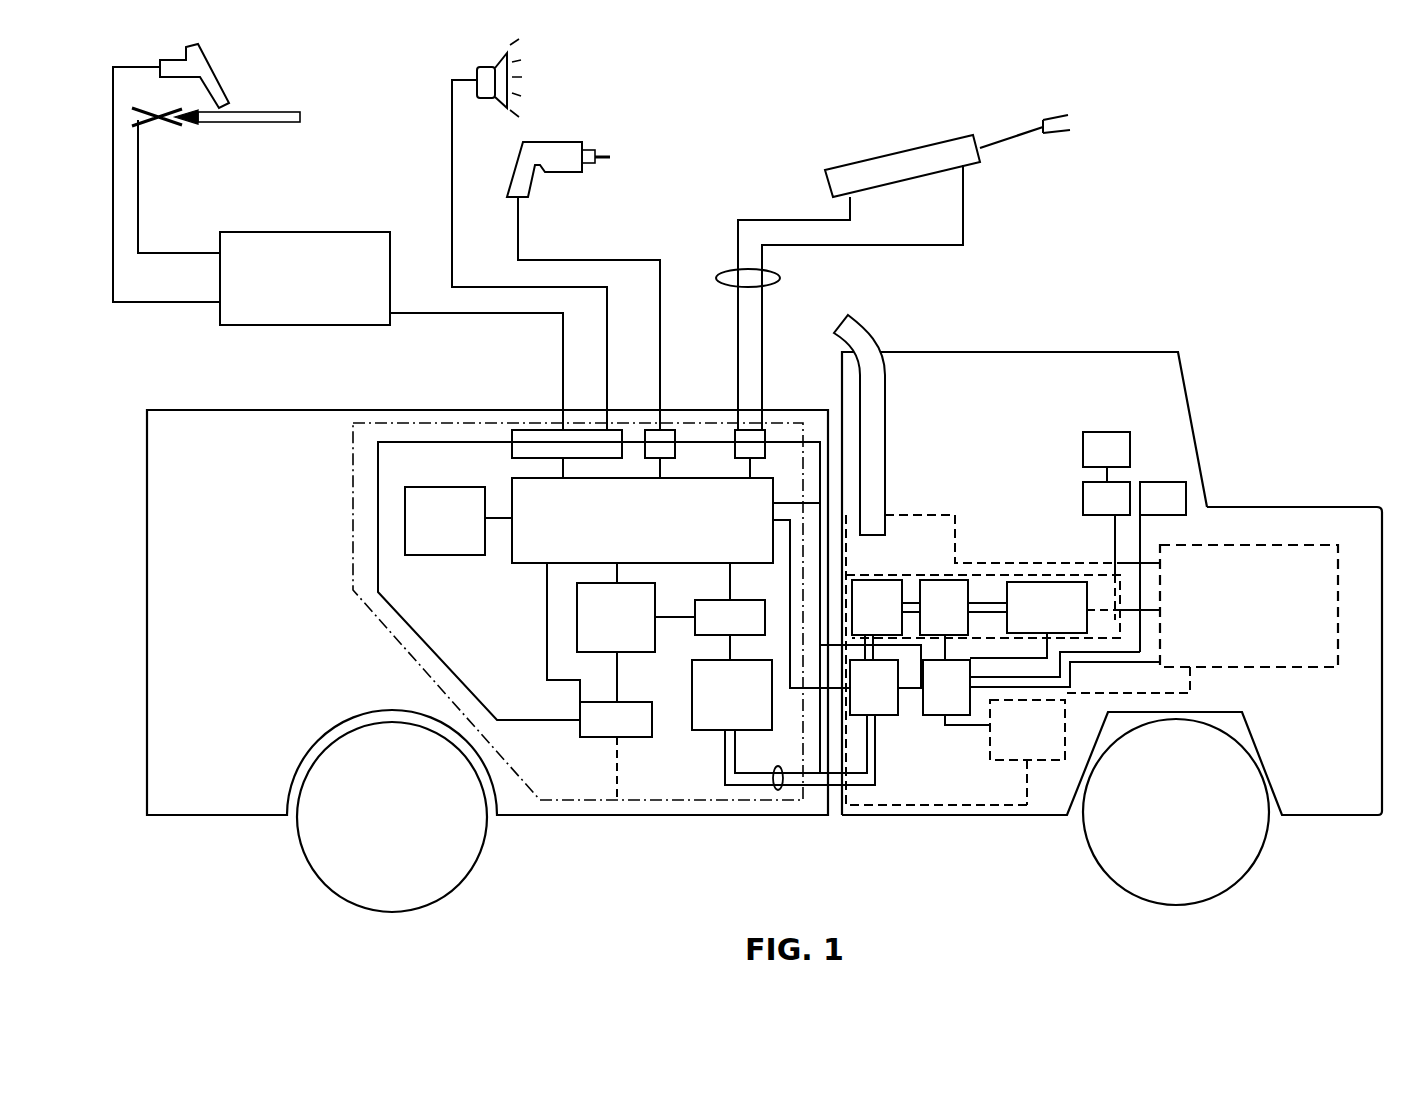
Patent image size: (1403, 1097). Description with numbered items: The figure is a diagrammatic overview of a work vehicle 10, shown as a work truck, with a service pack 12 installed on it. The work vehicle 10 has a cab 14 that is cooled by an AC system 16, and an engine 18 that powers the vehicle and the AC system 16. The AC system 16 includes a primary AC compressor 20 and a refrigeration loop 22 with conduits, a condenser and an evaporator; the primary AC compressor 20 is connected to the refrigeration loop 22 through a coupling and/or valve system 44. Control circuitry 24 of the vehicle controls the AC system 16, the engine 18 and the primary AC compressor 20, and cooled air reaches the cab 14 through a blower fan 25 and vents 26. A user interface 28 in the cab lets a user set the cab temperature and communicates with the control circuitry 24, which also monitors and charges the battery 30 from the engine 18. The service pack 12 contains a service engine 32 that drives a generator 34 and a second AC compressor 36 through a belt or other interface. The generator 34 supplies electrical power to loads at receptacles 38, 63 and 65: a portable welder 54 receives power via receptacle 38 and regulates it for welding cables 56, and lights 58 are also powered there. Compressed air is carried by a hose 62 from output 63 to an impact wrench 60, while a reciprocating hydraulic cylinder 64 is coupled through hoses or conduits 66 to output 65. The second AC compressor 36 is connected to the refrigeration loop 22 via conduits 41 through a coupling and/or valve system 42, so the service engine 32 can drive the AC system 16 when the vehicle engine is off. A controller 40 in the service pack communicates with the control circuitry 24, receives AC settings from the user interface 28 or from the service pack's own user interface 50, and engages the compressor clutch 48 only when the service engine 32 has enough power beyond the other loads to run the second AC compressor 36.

The work vehicle 10 is at (218, 838).
The service pack 12 is at (356, 421).
The cab 14 is at (997, 212).
The AC system 16 is at (970, 575).
The engine 18 is at (1247, 667).
The primary AC compressor 20 is at (1045, 582).
The refrigeration loop 22 is at (878, 580).
The control circuitry 24 is at (962, 660).
The blower fan 25 is at (1083, 496).
The vents 26 is at (1083, 446).
The user interface 28 is at (1180, 483).
The battery 30 is at (992, 760).
The service engine 32 is at (630, 652).
The generator 34 is at (600, 737).
The second AC compressor 36 is at (703, 730).
The receptacle 38 is at (537, 430).
The controller 40 is at (512, 482).
The conduits 41 is at (777, 790).
The coupling and/or valve system 42 is at (898, 715).
The coupling and/or valve system 44 is at (945, 578).
The compressor clutch 48 is at (710, 600).
The user interface 50 is at (445, 487).
The portable welder 54 is at (315, 232).
The cables suitable for a welding application 56 is at (270, 112).
The lights 58 is at (490, 67).
The impact wrench 60 is at (560, 142).
The hose 62 is at (600, 258).
The output 63 is at (668, 458).
The reciprocating hydraulic cylinder 64 is at (905, 150).
The output 65 is at (760, 458).
The hoses or conduits 66 is at (735, 275).